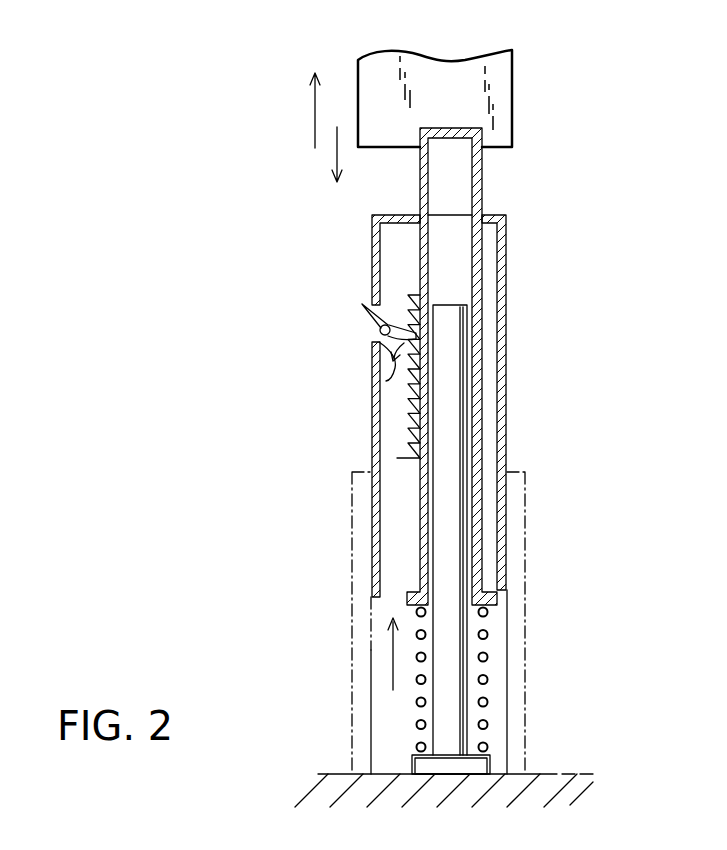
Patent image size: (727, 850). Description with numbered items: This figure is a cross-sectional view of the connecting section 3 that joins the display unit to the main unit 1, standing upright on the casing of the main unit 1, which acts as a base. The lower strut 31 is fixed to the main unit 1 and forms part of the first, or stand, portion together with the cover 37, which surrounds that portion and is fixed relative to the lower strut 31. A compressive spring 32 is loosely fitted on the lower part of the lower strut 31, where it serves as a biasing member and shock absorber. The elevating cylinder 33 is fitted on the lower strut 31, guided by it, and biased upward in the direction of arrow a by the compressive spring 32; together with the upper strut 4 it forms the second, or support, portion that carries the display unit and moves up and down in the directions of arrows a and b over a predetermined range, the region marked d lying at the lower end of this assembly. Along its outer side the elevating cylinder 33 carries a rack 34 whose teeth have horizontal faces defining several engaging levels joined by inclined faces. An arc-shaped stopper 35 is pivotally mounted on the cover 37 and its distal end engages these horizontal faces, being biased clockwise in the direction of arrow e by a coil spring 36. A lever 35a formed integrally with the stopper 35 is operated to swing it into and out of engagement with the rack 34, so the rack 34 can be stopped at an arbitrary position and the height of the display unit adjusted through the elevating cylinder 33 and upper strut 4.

The main unit 1 is at (557, 792).
The connecting section 3 is at (457, 317).
The upper strut 4 is at (378, 76).
The lower strut 31 is at (463, 408).
The compressive spring 32 is at (485, 678).
The elevating cylinder 33 is at (483, 277).
The rack 34 is at (410, 433).
The stopper 35 is at (348, 294).
The lever 35a is at (398, 276).
The coil spring 36 is at (386, 381).
The cover 37 is at (372, 360).
The arrow a is at (313, 110).
The arrow b is at (334, 160).
The stroke distance d is at (393, 660).
The arrow e is at (430, 345).